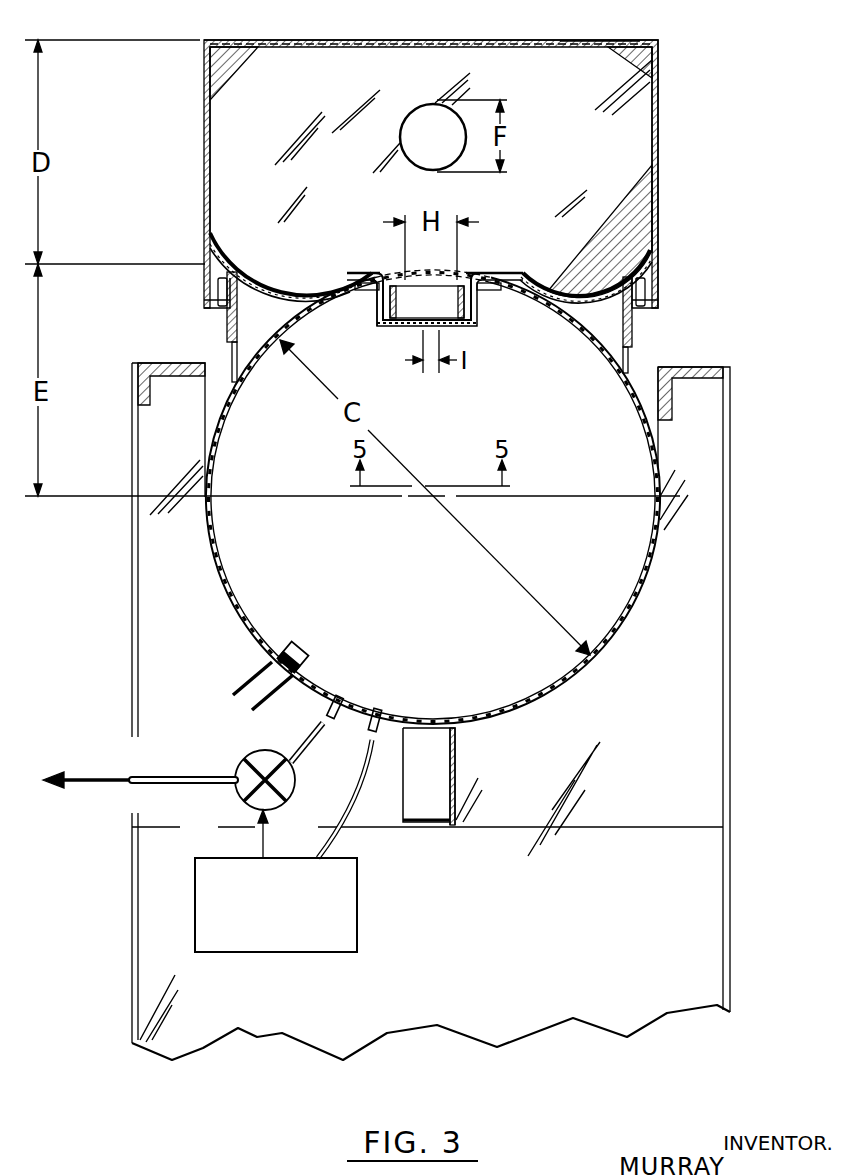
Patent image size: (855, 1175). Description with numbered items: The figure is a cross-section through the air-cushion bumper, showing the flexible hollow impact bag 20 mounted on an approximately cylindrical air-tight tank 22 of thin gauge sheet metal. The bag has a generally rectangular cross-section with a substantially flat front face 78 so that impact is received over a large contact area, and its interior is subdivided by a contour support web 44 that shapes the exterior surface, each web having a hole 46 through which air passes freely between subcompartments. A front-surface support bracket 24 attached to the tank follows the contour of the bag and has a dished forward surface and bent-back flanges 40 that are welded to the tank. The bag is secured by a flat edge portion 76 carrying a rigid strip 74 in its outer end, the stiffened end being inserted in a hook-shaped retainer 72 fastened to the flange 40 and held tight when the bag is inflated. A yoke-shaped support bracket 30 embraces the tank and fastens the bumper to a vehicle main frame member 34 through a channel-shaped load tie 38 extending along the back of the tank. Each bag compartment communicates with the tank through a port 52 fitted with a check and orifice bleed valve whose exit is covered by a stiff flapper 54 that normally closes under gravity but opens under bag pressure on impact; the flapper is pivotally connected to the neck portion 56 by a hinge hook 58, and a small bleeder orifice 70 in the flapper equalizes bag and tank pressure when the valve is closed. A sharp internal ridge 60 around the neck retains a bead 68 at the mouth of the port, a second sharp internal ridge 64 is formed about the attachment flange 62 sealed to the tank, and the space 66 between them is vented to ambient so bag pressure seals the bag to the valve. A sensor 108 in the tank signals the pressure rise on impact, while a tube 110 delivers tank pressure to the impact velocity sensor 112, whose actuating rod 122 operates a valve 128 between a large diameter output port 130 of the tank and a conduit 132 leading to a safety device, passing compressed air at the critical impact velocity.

The impact bag 20 is at (198, 134).
The tank 22 is at (264, 614).
The front-surface support bracket 24 is at (276, 296).
The support bracket 30 is at (150, 645).
The vehicle main frame member 34 is at (148, 970).
The load tie 38 is at (460, 768).
The bent-back flange 40 is at (231, 364).
The contour support web 44 is at (485, 60).
The hole 46 is at (400, 137).
The port 52 is at (400, 300).
The flapper member 54 is at (382, 335).
The neck portion 56 is at (376, 298).
The hinge hook 58 is at (380, 306).
The sharp internal ridge 60 is at (474, 320).
The attachment flange 62 is at (372, 291).
The second sharp internal ridge 64 is at (364, 285).
The space 66 is at (483, 292).
The bead 68 is at (463, 318).
The bleeder orifice 70 is at (430, 327).
The hook-shaped retainer 72 is at (230, 339).
The rigid strip 74 is at (220, 306).
The flat edge portion 76 is at (205, 262).
The flat front face 78 is at (596, 40).
The sensor 108 is at (303, 643).
The tube 110 is at (380, 736).
The impact velocity sensor 112 is at (358, 910).
The actuating rod 122 is at (268, 830).
The valve 128 is at (257, 752).
The output port 130 is at (323, 708).
The conduit 132 is at (198, 786).